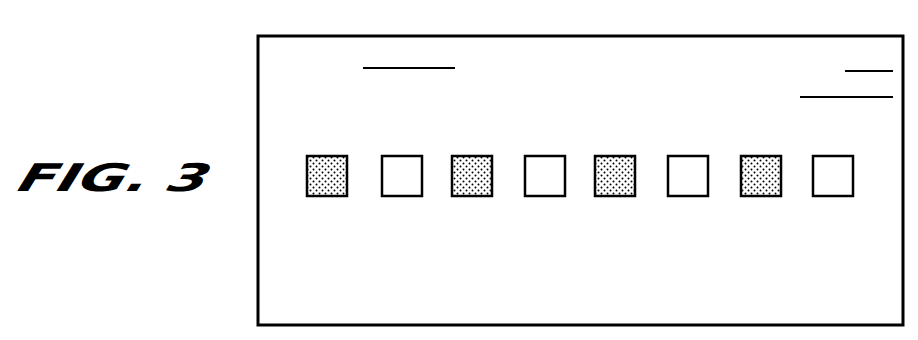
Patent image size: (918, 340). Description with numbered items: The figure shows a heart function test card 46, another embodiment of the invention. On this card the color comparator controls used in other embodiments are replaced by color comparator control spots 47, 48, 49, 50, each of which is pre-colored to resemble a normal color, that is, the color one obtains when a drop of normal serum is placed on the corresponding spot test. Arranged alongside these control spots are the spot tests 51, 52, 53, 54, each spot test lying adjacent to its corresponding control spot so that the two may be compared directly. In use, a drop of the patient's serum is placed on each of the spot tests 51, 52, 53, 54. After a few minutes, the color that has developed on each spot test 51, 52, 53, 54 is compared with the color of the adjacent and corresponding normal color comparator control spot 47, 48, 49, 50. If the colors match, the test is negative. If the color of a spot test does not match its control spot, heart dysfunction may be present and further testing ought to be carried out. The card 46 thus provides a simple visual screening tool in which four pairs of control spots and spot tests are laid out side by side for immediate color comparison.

The heart function test card 46 is at (257, 241).
The color comparator control spot 47 is at (322, 163).
The color comparator control spot 48 is at (468, 163).
The color comparator control spot 49 is at (608, 165).
The color comparator control spot 50 is at (755, 165).
The spot test 51 is at (393, 163).
The spot test 52 is at (533, 165).
The spot test 53 is at (682, 165).
The spot test 54 is at (828, 165).